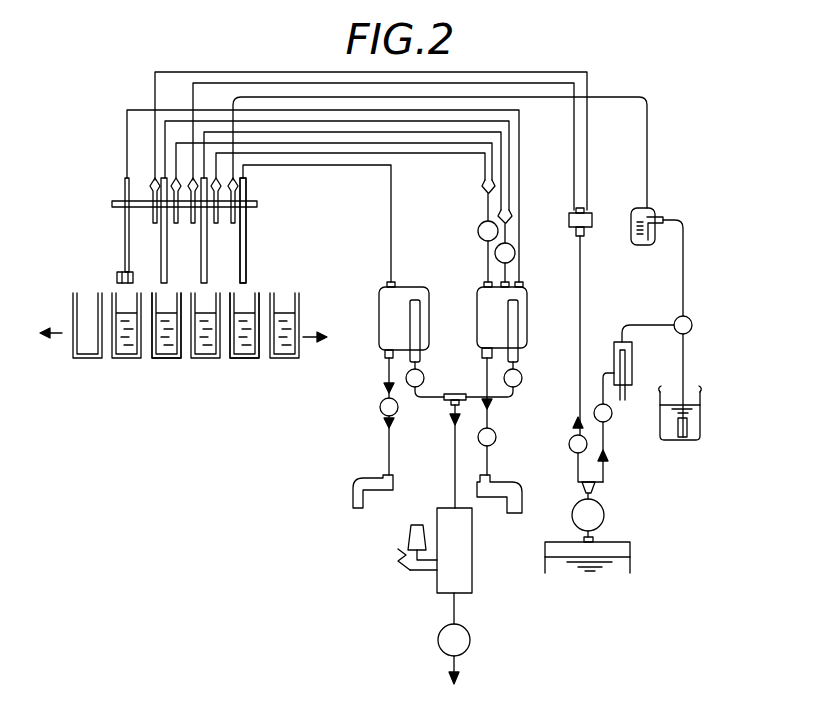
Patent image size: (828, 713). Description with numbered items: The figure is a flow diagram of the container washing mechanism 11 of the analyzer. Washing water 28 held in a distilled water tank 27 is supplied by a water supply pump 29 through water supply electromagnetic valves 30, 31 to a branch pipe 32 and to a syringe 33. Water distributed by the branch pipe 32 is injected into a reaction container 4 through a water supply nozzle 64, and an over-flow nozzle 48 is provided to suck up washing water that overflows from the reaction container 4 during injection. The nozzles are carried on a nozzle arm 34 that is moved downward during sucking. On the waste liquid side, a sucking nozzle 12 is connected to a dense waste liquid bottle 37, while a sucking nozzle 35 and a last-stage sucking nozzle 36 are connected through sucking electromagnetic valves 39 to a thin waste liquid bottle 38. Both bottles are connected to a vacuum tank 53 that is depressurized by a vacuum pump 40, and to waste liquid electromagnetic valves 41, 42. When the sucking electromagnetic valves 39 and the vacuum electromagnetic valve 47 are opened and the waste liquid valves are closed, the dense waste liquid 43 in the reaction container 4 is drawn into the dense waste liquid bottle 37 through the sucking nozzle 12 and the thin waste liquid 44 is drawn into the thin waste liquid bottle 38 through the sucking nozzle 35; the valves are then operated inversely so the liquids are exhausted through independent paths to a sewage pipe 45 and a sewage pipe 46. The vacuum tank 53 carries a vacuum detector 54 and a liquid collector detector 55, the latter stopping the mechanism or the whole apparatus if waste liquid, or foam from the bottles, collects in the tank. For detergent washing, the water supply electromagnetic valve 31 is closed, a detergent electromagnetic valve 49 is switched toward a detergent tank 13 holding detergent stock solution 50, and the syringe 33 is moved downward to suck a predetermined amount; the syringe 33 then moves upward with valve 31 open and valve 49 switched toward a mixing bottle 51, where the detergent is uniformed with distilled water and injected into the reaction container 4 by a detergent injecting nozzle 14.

The washing mechanism 11 is at (106, 114).
The nozzle arm 34 is at (118, 202).
The sucking nozzle 36 is at (124, 257).
The water supply nozzle 64 is at (192, 224).
The sucking nozzle 35 is at (211, 222).
The sucking nozzle 12 is at (248, 279).
The detergent injecting nozzle 14 is at (238, 217).
The over-flow nozzle 48 is at (245, 233).
The reaction container 4 is at (174, 358).
The thin waste liquid 44 is at (153, 353).
The dense waste liquid 43 is at (243, 355).
The dense waste liquid bottle 37 is at (380, 310).
The thin waste liquid bottle 38 is at (488, 312).
The sucking electromagnetic valve 39 is at (478, 231).
The vacuum electromagnetic valve 47 is at (424, 376).
The waste liquid electromagnetic valve 41 is at (380, 406).
The waste liquid electromagnetic valve 42 is at (496, 437).
The sewage pipe 45 is at (376, 498).
The sewage pipe 46 is at (504, 498).
The vacuum detector 54 is at (447, 506).
The vacuum tank 53 is at (463, 583).
The liquid collector detector 55 is at (400, 574).
The vacuum pump 40 is at (471, 641).
The branch pipe 32 is at (592, 214).
The mixing bottle 51 is at (656, 214).
The syringe 33 is at (621, 340).
The detergent electromagnetic valve 49 is at (692, 326).
The detergent tank 13 is at (700, 396).
The detergent stock solution 50 is at (697, 432).
The water supply electromagnetic valve 31 is at (610, 418).
The water supply electromagnetic valve 30 is at (571, 451).
The water supply pump 29 is at (604, 510).
The distilled water tank 27 is at (631, 548).
The washing water 28 is at (566, 576).